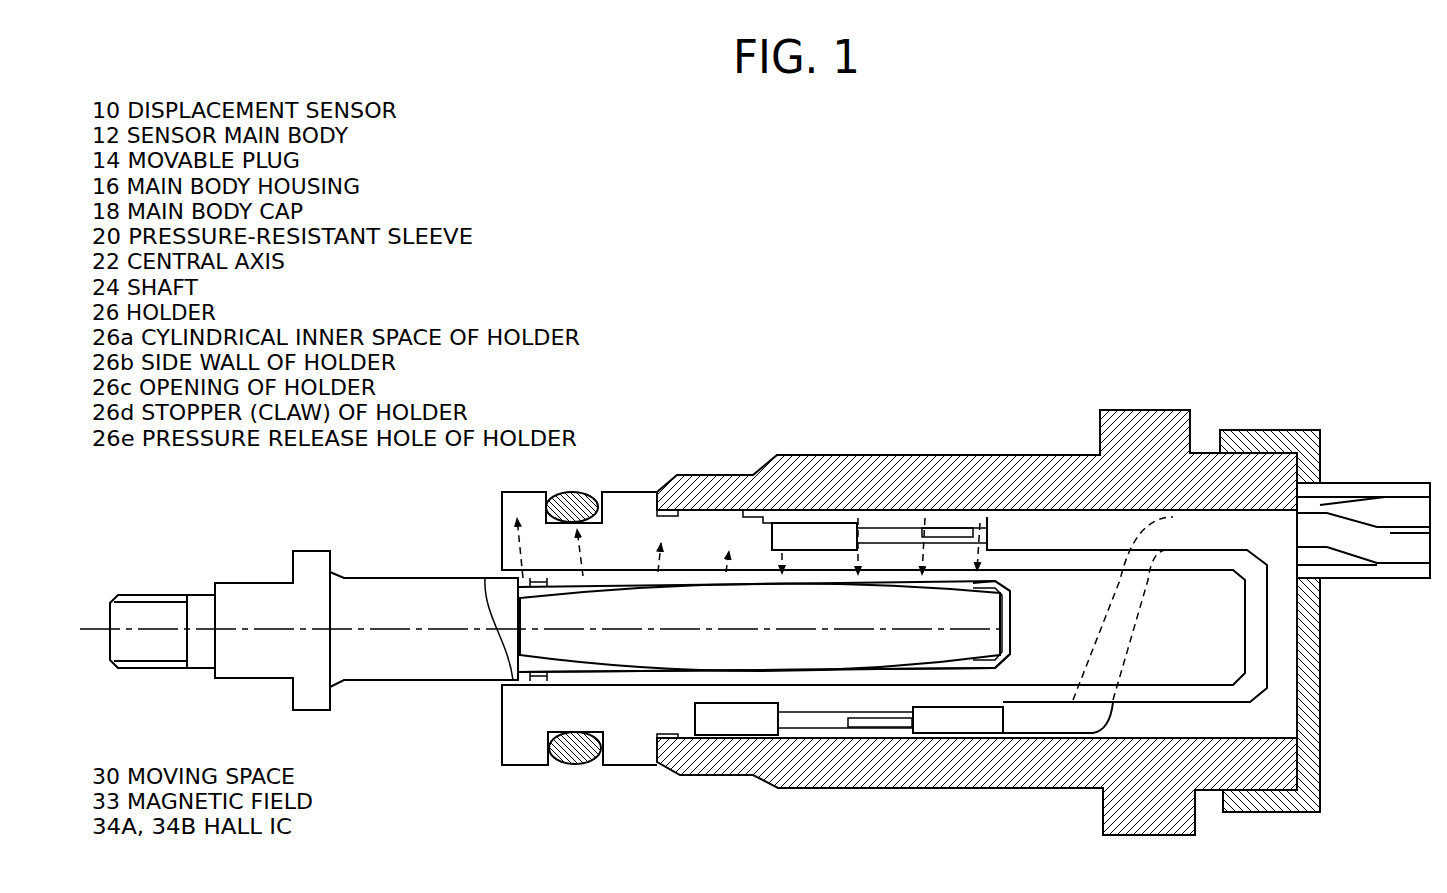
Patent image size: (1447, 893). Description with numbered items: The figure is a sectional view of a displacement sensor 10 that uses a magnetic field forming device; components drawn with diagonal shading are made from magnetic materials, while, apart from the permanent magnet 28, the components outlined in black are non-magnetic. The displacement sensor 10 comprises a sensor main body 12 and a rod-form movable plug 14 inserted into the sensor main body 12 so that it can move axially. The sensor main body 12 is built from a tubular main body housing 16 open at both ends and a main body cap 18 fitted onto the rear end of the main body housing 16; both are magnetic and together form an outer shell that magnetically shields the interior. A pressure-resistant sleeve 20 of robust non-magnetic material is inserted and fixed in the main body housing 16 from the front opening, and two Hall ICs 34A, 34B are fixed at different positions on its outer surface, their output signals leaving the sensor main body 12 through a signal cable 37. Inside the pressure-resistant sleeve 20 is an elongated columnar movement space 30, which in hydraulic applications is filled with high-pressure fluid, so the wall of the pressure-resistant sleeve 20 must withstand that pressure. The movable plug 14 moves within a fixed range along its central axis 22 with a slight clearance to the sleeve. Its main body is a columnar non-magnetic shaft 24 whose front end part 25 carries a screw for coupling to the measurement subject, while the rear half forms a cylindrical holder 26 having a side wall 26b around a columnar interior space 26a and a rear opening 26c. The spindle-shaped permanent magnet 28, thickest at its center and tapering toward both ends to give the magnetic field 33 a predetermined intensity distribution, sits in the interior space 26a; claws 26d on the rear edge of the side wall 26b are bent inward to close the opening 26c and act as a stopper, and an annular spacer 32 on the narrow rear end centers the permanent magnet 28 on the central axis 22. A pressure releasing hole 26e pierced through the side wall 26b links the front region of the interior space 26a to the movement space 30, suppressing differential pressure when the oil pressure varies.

The displacement sensor 10 is at (805, 386).
The sensor main body 12 is at (909, 431).
The movable plug 14 is at (410, 574).
The main body housing 16 is at (978, 482).
The main body cap 18 is at (1258, 444).
The pressure-resistant sleeve 20 is at (625, 515).
The central axis 22 is at (430, 632).
The shaft 24 is at (372, 660).
The front end part 25 is at (165, 647).
The holder 26 is at (605, 693).
The interior space 26a is at (532, 672).
The side wall 26b is at (640, 668).
The opening 26c is at (1007, 634).
The claws 26d is at (1005, 662).
The pressure releasing hole 26e is at (540, 674).
The permanent magnet 28 is at (817, 643).
The movement space 30 is at (1045, 588).
The spacer 32 is at (975, 585).
The magnetic field 33 is at (500, 545).
The Hall IC 34A is at (800, 525).
The Hall IC 34B is at (733, 720).
The signal cable 37 is at (1365, 513).